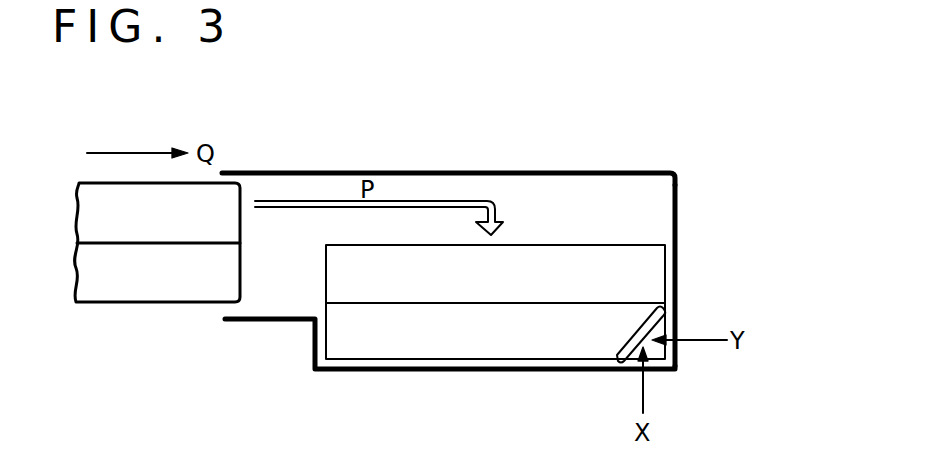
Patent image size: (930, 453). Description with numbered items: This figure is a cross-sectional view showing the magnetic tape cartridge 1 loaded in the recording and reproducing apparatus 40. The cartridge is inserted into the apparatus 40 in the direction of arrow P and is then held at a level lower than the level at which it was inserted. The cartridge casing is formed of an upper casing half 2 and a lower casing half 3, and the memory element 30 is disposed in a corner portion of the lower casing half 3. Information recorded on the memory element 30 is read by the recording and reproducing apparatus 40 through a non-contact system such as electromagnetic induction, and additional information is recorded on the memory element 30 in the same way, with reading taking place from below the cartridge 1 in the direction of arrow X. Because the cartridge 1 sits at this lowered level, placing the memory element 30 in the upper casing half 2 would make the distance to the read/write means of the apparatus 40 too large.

The magnetic tape cartridge 1 is at (469, 244).
The upper casing half 2 is at (678, 266).
The lower casing half 3 is at (316, 340).
The memory element 30 is at (676, 326).
The recording and reproducing apparatus 40 is at (577, 172).